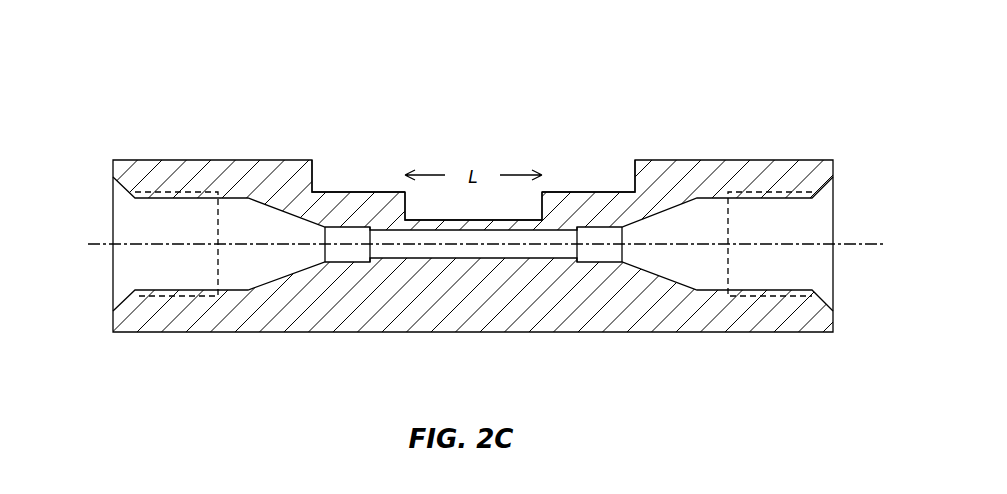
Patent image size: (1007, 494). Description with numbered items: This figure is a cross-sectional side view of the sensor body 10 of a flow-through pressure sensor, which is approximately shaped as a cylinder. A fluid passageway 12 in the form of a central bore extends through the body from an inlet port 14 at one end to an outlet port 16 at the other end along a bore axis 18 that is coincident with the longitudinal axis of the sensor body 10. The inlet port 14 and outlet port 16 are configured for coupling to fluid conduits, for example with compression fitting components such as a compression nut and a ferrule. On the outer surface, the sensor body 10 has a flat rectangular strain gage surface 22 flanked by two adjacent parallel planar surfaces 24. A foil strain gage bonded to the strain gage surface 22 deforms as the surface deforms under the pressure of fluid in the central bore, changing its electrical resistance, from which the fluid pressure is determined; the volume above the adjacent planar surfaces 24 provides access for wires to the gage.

The sensor body 10 is at (632, 104).
The fluid passageway 12 is at (498, 257).
The inlet port 14 is at (843, 252).
The outlet port 16 is at (98, 252).
The bore axis 18 is at (847, 242).
The strain gage surface 22 is at (488, 220).
The parallel planar surfaces 24 is at (350, 190).